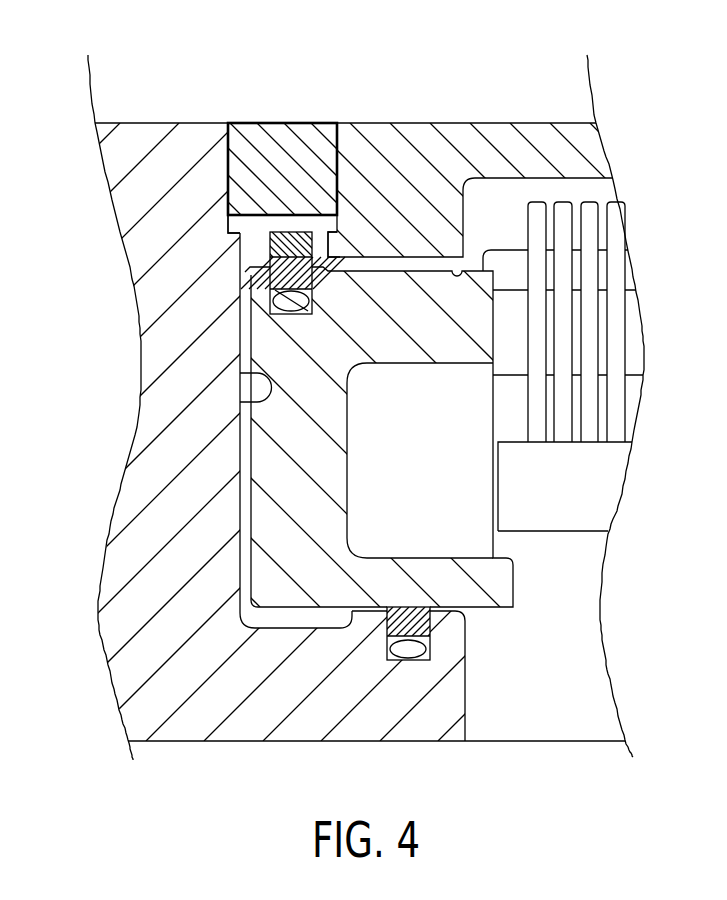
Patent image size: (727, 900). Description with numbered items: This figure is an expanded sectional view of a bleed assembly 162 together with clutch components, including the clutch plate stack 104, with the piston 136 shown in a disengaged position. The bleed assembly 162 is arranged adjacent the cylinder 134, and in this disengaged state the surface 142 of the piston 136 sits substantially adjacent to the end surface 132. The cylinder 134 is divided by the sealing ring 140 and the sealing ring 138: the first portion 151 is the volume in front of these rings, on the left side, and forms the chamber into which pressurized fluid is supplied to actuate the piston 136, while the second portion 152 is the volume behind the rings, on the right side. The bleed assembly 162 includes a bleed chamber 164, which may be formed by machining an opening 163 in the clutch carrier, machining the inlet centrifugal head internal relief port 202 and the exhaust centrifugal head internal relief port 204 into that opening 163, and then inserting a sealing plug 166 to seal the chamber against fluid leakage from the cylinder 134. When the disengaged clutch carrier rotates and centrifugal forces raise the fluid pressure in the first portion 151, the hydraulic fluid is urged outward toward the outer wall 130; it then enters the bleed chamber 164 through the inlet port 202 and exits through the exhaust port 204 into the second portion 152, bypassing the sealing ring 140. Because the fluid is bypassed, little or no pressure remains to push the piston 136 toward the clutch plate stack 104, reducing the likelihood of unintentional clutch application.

The clutch plate stack 104 is at (559, 202).
The outer wall 130 is at (394, 259).
The end surface 132 is at (253, 400).
The cylinder 134 is at (178, 613).
The piston 136 is at (275, 595).
The sealing ring 138 is at (425, 630).
The sealing ring 140 is at (283, 283).
The surface 142 is at (245, 505).
The first portion 151 is at (250, 438).
The second portion 152 is at (429, 262).
The bleed assembly 162 is at (284, 116).
The opening 163 is at (243, 128).
The bleed chamber 164 is at (233, 218).
The sealing plug 166 is at (305, 148).
The inlet centrifugal head internal relief port 202 is at (256, 247).
The exhaust centrifugal head internal relief port 204 is at (326, 244).